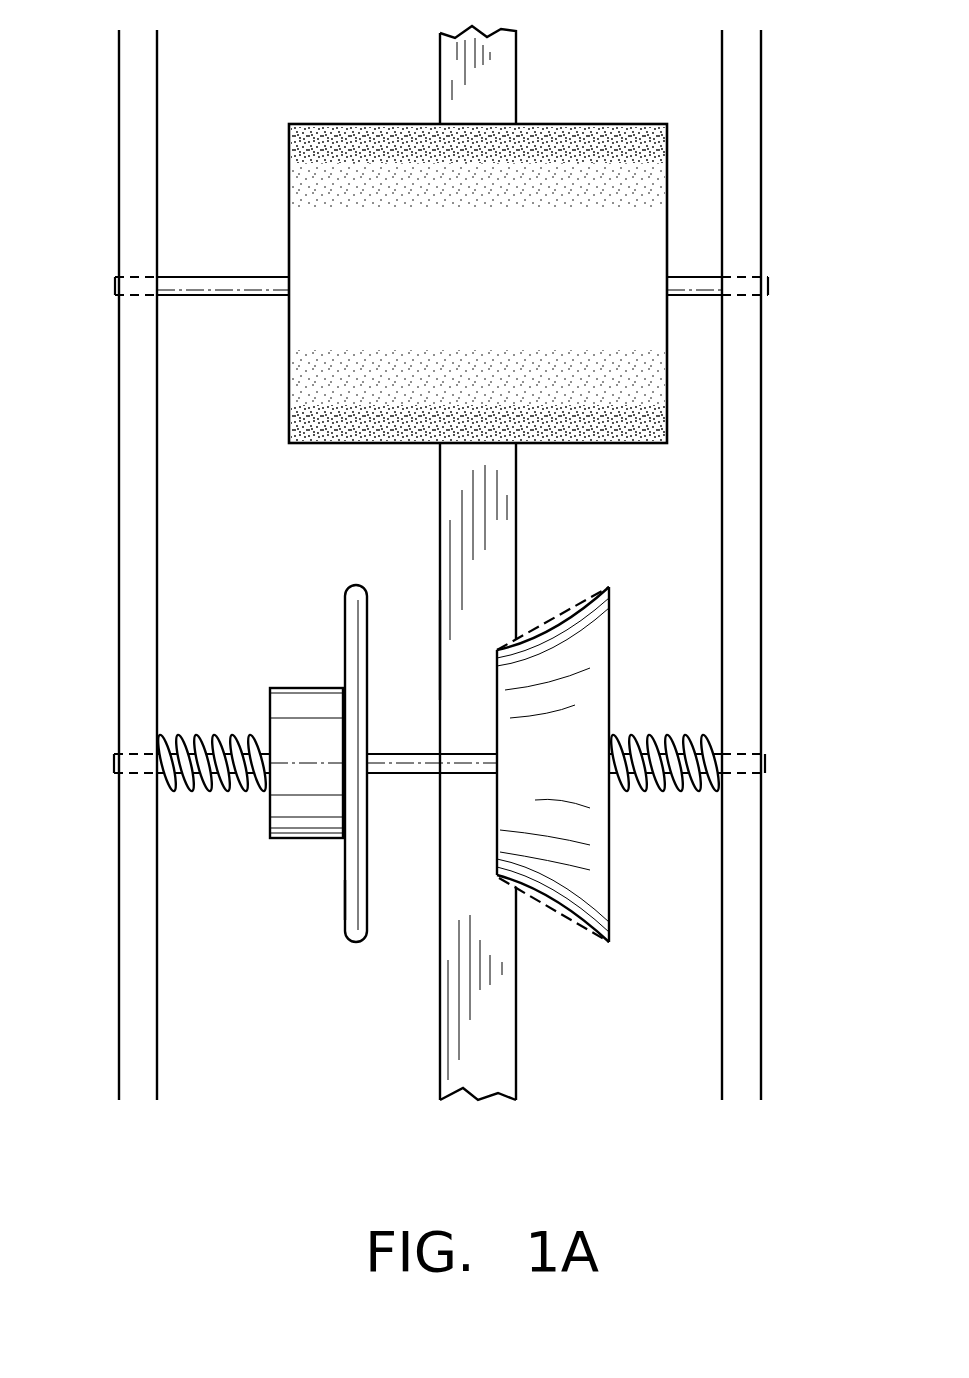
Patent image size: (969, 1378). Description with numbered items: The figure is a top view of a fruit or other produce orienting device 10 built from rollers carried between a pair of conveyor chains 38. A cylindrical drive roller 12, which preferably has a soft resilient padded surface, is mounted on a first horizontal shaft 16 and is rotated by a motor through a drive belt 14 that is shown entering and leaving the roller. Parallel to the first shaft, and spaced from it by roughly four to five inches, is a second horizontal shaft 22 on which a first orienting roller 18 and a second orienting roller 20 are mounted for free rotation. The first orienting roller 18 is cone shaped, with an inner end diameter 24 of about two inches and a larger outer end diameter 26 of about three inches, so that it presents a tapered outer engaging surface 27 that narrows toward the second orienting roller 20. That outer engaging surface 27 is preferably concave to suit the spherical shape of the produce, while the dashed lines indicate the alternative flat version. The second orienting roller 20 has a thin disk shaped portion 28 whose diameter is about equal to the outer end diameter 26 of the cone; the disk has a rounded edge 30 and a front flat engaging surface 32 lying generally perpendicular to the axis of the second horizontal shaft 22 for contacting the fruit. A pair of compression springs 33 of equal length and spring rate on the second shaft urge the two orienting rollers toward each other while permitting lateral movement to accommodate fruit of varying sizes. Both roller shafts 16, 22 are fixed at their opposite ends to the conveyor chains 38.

The fruit or other produce orienting device 10 is at (838, 403).
The cylindrical drive roller 12 is at (638, 203).
The drive belt 14 is at (500, 83).
The first horizontal shaft 16 is at (768, 286).
The first orienting roller 18 is at (587, 697).
The second orienting roller 20 is at (298, 710).
The second horizontal shaft 22 is at (766, 764).
The inner end diameter 24 is at (440, 658).
The outer end diameter 26 is at (612, 623).
The outer engaging surface 27 is at (560, 648).
The disk shaped portion 28 is at (348, 895).
The rounded edge 30 is at (353, 583).
The front flat engaging surface 32 is at (366, 609).
The compression springs 33 is at (225, 792).
The conveyor chains 38 is at (133, 953).